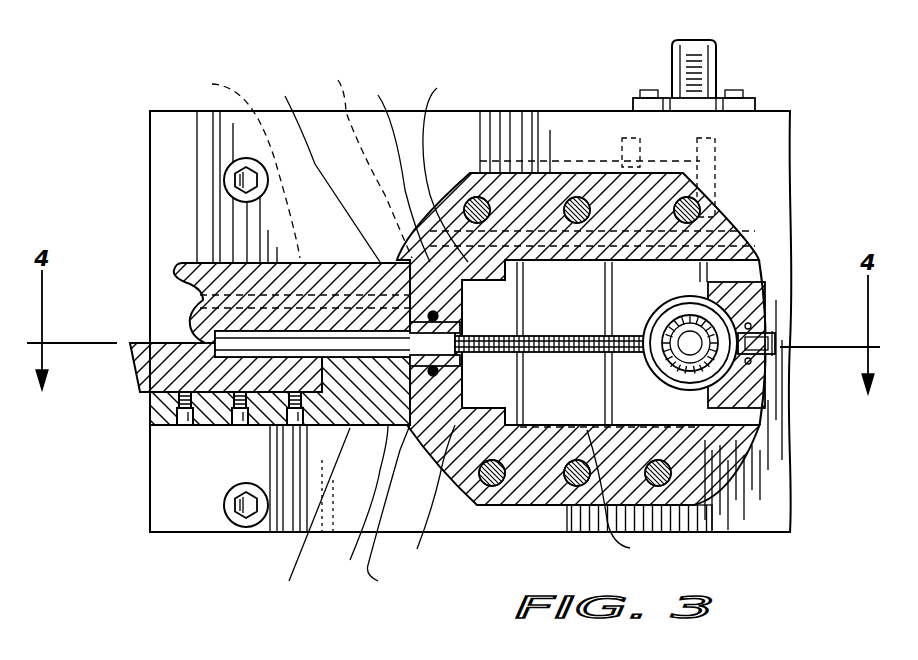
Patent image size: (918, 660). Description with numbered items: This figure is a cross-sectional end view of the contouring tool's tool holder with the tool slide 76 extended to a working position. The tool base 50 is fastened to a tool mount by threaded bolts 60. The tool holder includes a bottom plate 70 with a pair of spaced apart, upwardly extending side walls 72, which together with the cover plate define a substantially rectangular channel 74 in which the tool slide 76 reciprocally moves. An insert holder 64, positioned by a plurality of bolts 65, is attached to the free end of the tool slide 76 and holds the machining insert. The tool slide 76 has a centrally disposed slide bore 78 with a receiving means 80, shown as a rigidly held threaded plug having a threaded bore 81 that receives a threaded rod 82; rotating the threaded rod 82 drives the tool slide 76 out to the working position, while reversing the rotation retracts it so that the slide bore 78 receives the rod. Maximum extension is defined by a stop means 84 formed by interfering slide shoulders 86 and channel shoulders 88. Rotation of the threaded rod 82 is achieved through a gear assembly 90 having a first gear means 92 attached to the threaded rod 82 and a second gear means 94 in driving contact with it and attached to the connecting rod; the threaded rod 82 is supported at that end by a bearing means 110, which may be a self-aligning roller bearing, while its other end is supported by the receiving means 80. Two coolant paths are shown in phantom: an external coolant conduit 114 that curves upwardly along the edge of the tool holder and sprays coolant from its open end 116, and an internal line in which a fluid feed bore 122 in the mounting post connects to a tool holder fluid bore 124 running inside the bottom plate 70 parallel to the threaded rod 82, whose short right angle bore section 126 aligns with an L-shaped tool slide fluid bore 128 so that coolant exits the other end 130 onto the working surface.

The tool base 50 is at (160, 181).
The threaded bolts 60 is at (232, 170).
The insert holder 64 is at (130, 366).
The bolts 65 is at (293, 426).
The bottom plate 70 is at (688, 462).
The side walls 72 is at (638, 262).
The channel 74 is at (565, 420).
The tool slide 76 is at (300, 525).
The slide bore 78 is at (205, 263).
The receiving means 80 is at (318, 174).
The threaded bore 81 is at (305, 512).
The threaded rod 82 is at (621, 494).
The stop means 84 is at (388, 510).
The slide shoulders 86 is at (405, 323).
The channel shoulders 88 is at (395, 324).
The gear assembly 90 is at (750, 410).
The first gear means 92 is at (722, 376).
The second gear means 94 is at (712, 300).
The bearing means 110 is at (745, 327).
The coolant conduit 114 is at (588, 170).
The open end 116 is at (490, 165).
The fluid feed bore 122 is at (735, 214).
The tool holder fluid bore 124 is at (612, 215).
The right angle bore section 126 is at (356, 161).
The tool slide fluid bore 128 is at (236, 166).
The other end 130 is at (205, 300).